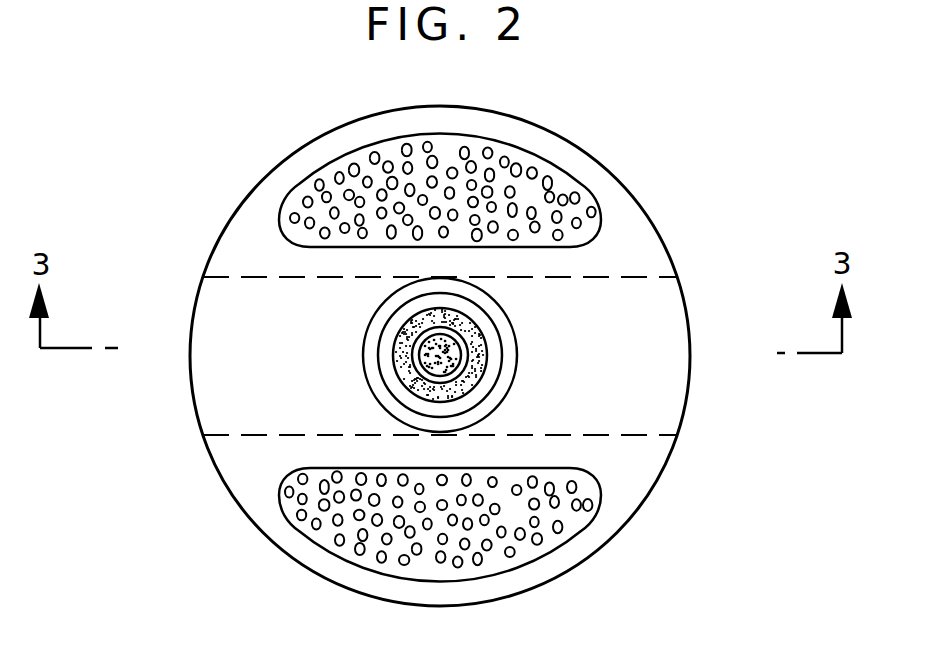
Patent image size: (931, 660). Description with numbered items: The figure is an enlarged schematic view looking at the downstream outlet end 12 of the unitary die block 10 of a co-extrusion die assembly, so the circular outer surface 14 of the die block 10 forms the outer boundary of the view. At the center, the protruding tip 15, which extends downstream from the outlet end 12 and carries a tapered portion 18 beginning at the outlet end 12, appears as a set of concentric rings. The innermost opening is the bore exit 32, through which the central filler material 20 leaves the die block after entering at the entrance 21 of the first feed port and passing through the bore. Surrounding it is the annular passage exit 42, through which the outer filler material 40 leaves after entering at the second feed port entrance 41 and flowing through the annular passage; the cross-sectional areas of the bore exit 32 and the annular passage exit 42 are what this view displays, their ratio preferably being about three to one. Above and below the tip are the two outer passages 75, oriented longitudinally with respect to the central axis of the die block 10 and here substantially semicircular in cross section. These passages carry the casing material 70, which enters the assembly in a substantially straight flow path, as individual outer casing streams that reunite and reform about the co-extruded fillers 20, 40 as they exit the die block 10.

The unitary die block 10 is at (640, 113).
The outlet end 12 is at (624, 238).
The outer surface 14 is at (643, 205).
The protruding tip 15 is at (496, 338).
The tapered portion 18 is at (520, 345).
The central filler material 20 is at (454, 322).
The entrance of first feed port 21 is at (192, 320).
The bore exit 32 is at (446, 358).
The outer filler material 40 is at (478, 386).
The second feed port entrance 41 is at (687, 403).
The annular passage exit 42 is at (512, 388).
The casing material 70 is at (528, 200).
The outer passages 75 is at (442, 182).